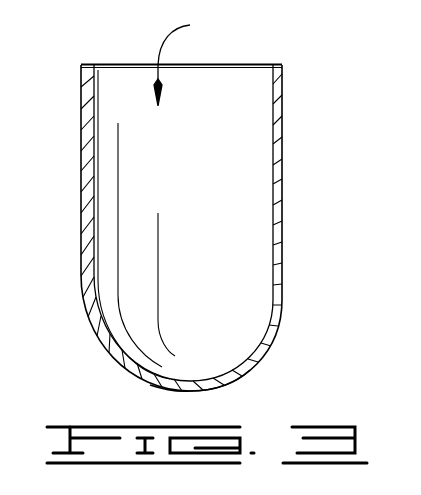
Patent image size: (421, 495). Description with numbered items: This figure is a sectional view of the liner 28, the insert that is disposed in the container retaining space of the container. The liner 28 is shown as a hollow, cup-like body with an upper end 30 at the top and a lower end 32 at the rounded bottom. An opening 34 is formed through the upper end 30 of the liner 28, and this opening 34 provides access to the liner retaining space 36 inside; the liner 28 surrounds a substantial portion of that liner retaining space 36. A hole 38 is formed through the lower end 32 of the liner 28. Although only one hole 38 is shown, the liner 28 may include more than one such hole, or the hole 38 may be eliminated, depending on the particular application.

The liner 28 is at (282, 148).
The upper end 30 is at (279, 64).
The lower end 32 is at (232, 378).
The opening 34 is at (97, 68).
The liner retaining space 36 is at (189, 60).
The hole 38 is at (187, 388).